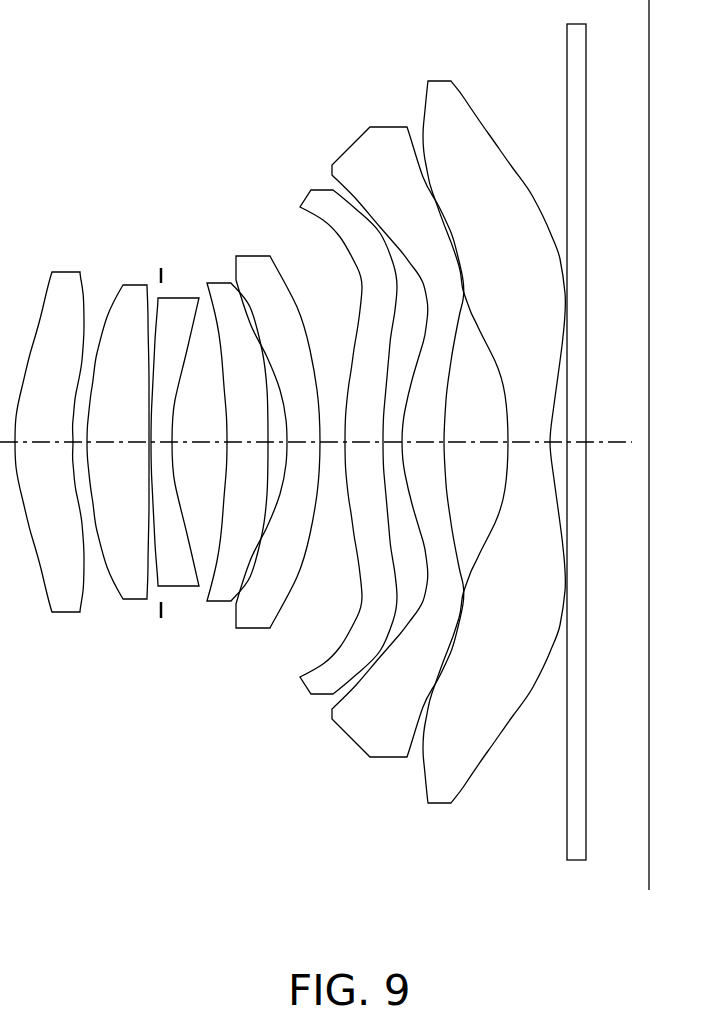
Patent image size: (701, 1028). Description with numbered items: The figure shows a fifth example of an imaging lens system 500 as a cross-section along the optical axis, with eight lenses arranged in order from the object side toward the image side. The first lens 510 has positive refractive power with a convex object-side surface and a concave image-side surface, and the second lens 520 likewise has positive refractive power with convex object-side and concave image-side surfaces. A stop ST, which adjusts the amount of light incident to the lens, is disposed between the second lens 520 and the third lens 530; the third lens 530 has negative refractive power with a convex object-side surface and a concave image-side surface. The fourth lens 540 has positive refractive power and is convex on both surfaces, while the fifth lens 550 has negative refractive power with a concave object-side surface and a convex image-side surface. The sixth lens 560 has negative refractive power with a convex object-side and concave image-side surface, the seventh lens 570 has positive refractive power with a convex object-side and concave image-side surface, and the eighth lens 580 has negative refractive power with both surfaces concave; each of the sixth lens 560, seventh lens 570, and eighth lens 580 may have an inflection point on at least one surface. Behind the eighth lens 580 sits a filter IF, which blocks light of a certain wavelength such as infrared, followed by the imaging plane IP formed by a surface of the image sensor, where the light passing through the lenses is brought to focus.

The imaging lens system 500 is at (240, 136).
The first lens 510 is at (65, 614).
The second lens 520 is at (137, 601).
The third lens 530 is at (187, 588).
The fourth lens 540 is at (215, 603).
The fifth lens 550 is at (252, 629).
The sixth lens 560 is at (318, 707).
The seventh lens 570 is at (390, 758).
The eighth lens 580 is at (440, 804).
The stop ST is at (164, 271).
The filter IF is at (577, 861).
The imaging plane IP is at (648, 847).